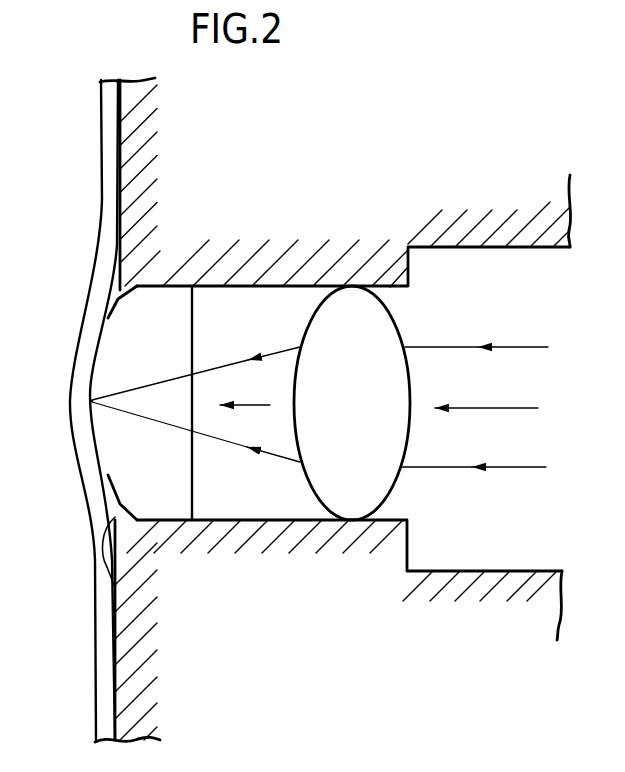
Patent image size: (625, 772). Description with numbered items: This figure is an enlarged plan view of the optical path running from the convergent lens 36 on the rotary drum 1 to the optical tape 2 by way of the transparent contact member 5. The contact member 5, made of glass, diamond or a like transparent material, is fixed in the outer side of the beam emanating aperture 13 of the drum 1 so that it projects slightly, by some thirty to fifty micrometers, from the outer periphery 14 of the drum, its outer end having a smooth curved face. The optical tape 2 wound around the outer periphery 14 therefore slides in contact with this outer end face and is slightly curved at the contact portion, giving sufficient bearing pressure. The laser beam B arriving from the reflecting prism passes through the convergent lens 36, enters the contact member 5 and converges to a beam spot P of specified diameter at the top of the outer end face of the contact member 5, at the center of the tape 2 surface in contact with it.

The rotary drum 1 is at (192, 113).
The optical tape 2 is at (102, 215).
The transparent contact member 5 is at (157, 507).
The beam emanating aperture 13 is at (243, 300).
The outer periphery 14 is at (115, 587).
The convergent lens 36 is at (350, 503).
The laser beam B is at (450, 347).
The beam spot P is at (95, 378).